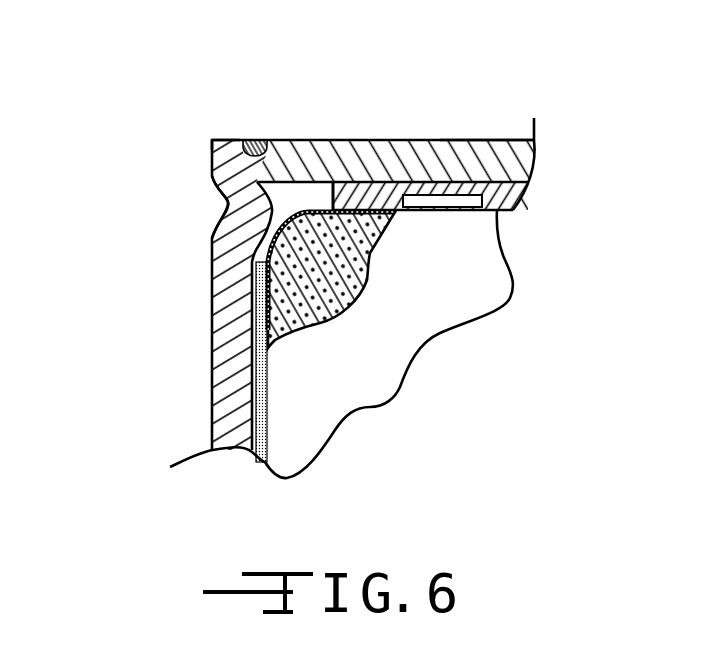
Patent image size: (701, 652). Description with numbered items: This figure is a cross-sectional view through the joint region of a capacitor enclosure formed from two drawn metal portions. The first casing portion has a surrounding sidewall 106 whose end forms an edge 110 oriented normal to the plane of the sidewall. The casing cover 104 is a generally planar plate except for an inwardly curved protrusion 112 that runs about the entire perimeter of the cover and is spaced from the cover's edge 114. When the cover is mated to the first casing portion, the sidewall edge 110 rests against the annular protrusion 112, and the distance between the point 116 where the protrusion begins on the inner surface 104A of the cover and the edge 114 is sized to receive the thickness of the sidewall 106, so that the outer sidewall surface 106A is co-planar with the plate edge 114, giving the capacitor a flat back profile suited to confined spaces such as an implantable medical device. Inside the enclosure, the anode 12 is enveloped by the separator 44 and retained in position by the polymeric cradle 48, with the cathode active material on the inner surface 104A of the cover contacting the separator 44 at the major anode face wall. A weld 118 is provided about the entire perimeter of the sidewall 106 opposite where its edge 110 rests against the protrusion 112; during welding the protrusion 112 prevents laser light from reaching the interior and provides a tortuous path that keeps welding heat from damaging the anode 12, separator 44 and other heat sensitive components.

The anode 12 is at (372, 255).
The separator 44 is at (417, 315).
The polymeric cradle 48 is at (528, 195).
The casing cover 104 is at (212, 288).
The inner surface of the casing cover 104A is at (270, 422).
The sidewall 106 is at (418, 140).
The outer sidewall surface 106A is at (481, 131).
The edge 110 is at (262, 174).
The inwardly curved protrusion 112 is at (228, 206).
The edge 114 is at (230, 140).
The point 116 is at (320, 174).
The weld 118 is at (250, 140).